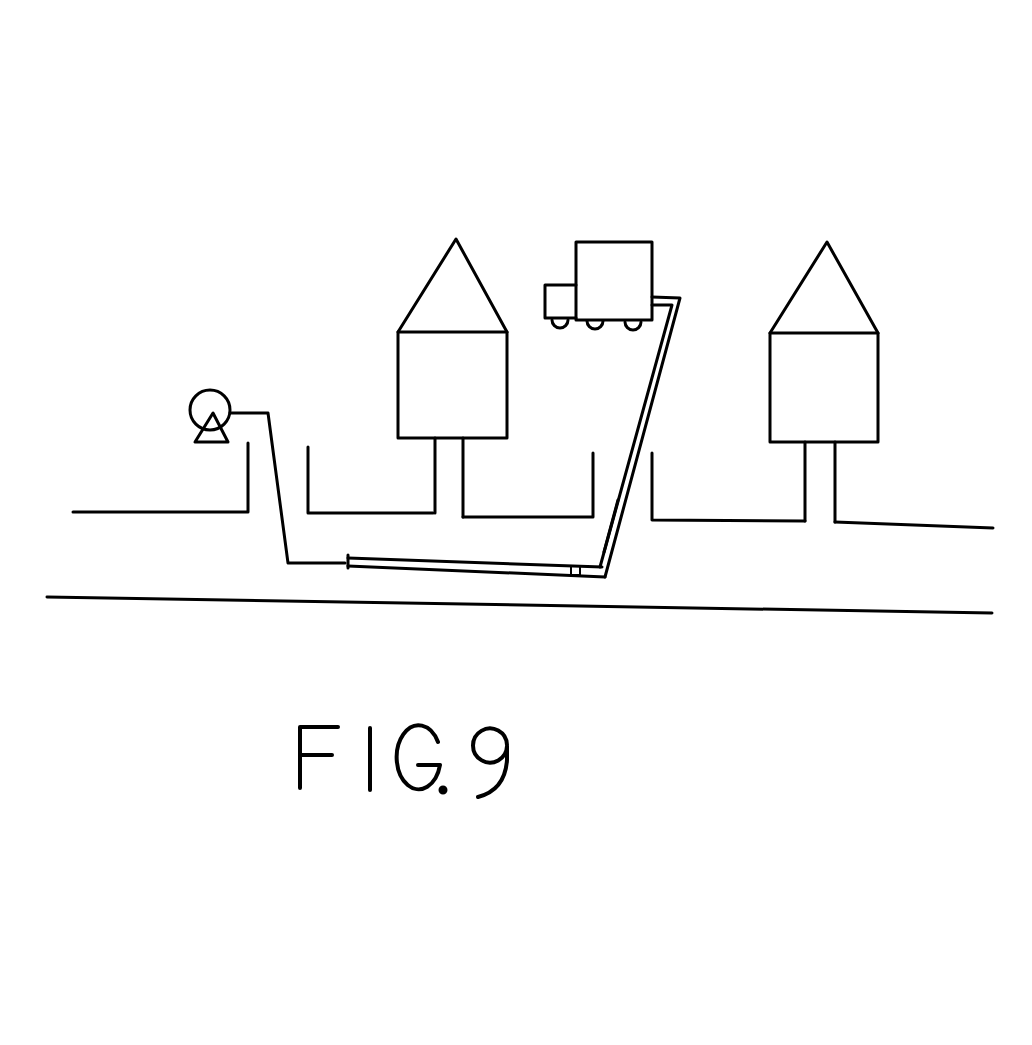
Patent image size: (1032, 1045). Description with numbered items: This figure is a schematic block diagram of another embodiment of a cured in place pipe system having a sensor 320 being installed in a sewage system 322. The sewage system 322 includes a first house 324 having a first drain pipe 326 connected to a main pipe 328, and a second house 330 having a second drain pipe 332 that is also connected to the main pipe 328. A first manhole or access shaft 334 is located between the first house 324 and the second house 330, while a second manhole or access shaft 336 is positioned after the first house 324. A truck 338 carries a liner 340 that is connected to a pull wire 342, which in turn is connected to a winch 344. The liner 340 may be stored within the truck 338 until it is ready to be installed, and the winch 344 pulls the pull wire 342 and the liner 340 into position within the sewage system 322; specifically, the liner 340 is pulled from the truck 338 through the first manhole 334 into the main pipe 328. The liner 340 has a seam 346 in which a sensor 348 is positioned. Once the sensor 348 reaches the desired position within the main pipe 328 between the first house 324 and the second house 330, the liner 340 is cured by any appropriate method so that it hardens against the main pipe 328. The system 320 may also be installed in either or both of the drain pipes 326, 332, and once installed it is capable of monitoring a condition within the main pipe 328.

The cured in place pipe system having a sensor 320 is at (541, 538).
The sewage system 322 is at (610, 642).
The first house 324 is at (442, 302).
The first drain pipe 326 is at (442, 477).
The main pipe 328 is at (735, 585).
The second house 330 is at (813, 292).
The second drain pipe 332 is at (835, 480).
The first manhole or access shaft 334 is at (645, 497).
The second manhole or access shaft 336 is at (258, 480).
The truck 338 is at (605, 255).
The liner 340 is at (660, 372).
The pull wire 342 is at (283, 528).
The winch 344 is at (203, 388).
The seam 346 is at (618, 535).
The sensor 348 is at (573, 577).